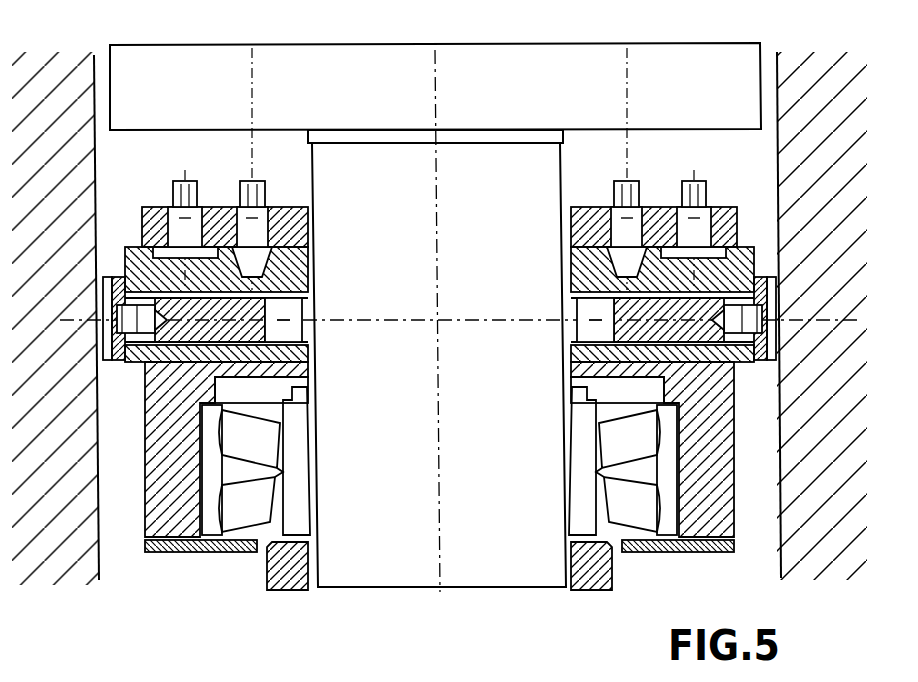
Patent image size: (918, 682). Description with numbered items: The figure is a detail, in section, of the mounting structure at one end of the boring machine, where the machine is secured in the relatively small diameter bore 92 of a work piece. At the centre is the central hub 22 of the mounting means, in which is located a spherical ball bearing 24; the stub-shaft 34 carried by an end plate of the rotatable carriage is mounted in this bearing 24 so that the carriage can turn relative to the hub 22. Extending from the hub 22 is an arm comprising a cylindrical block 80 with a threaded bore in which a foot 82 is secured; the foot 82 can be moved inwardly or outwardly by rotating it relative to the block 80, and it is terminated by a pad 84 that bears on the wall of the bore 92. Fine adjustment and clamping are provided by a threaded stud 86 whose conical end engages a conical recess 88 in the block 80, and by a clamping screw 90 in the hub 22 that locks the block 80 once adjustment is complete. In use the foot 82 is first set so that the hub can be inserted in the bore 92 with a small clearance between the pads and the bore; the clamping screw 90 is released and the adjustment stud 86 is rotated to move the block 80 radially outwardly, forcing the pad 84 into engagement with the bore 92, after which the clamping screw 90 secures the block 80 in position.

The central hub 22 is at (720, 458).
The spherical ball bearing 24 is at (653, 493).
The stub-shaft 34 is at (503, 62).
The cylindrical block 80 is at (742, 272).
The foot 82 is at (778, 266).
The pad 84 is at (782, 315).
The threaded stud 86 is at (611, 200).
The conical recess 88 is at (280, 250).
The clamping screw 90 is at (690, 178).
The bore 92 is at (100, 547).